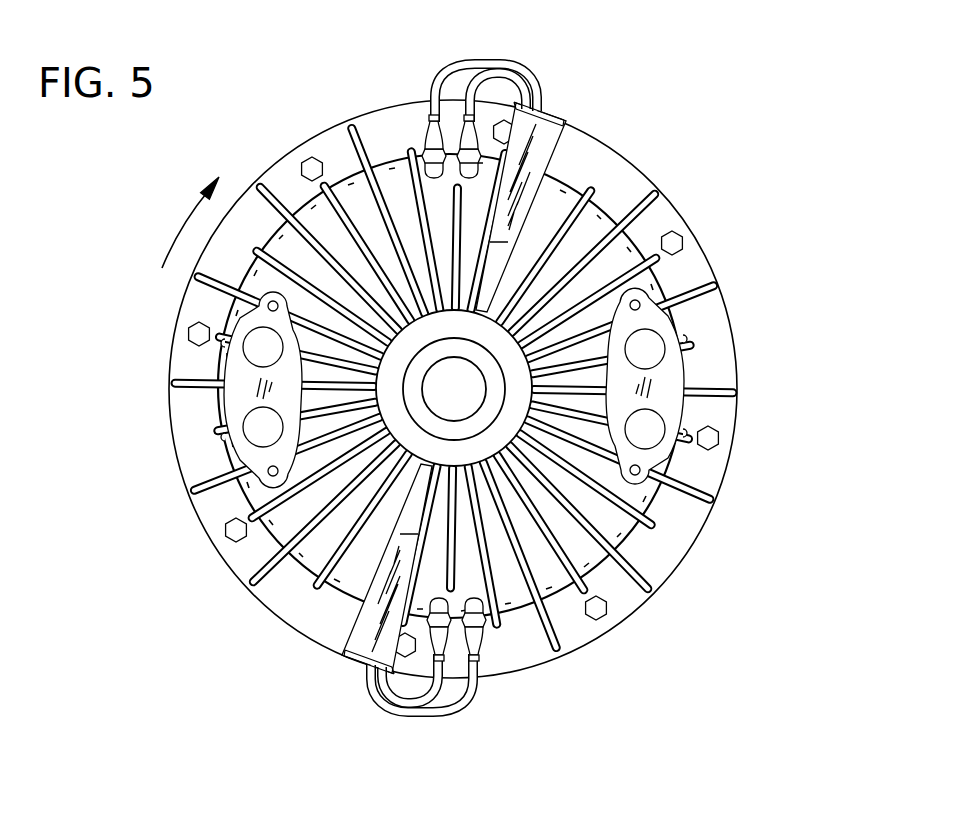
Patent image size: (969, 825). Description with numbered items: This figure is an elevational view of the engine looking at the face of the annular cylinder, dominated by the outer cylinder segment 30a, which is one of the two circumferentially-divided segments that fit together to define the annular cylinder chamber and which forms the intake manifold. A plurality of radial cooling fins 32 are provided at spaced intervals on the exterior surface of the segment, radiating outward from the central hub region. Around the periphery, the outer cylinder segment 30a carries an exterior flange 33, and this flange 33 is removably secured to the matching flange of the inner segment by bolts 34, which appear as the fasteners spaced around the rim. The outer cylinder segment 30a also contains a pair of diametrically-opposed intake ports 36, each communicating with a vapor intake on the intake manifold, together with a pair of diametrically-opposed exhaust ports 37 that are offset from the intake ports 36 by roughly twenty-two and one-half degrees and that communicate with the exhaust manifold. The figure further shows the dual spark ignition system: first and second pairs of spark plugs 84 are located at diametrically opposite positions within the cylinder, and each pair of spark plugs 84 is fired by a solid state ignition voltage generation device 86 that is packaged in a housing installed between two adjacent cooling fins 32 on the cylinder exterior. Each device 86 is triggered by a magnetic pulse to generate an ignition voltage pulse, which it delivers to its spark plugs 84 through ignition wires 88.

The outer cylinder segment 30a is at (672, 560).
The radial cooling fins 32 is at (600, 200).
The exterior flange 33 is at (713, 360).
The bolts 34 is at (676, 236).
The intake ports 36 is at (252, 359).
The exhaust ports 37 is at (252, 439).
The spark plugs 84 is at (456, 122).
The ignition voltage generation device 86 is at (560, 117).
The ignition wires 88 is at (466, 64).